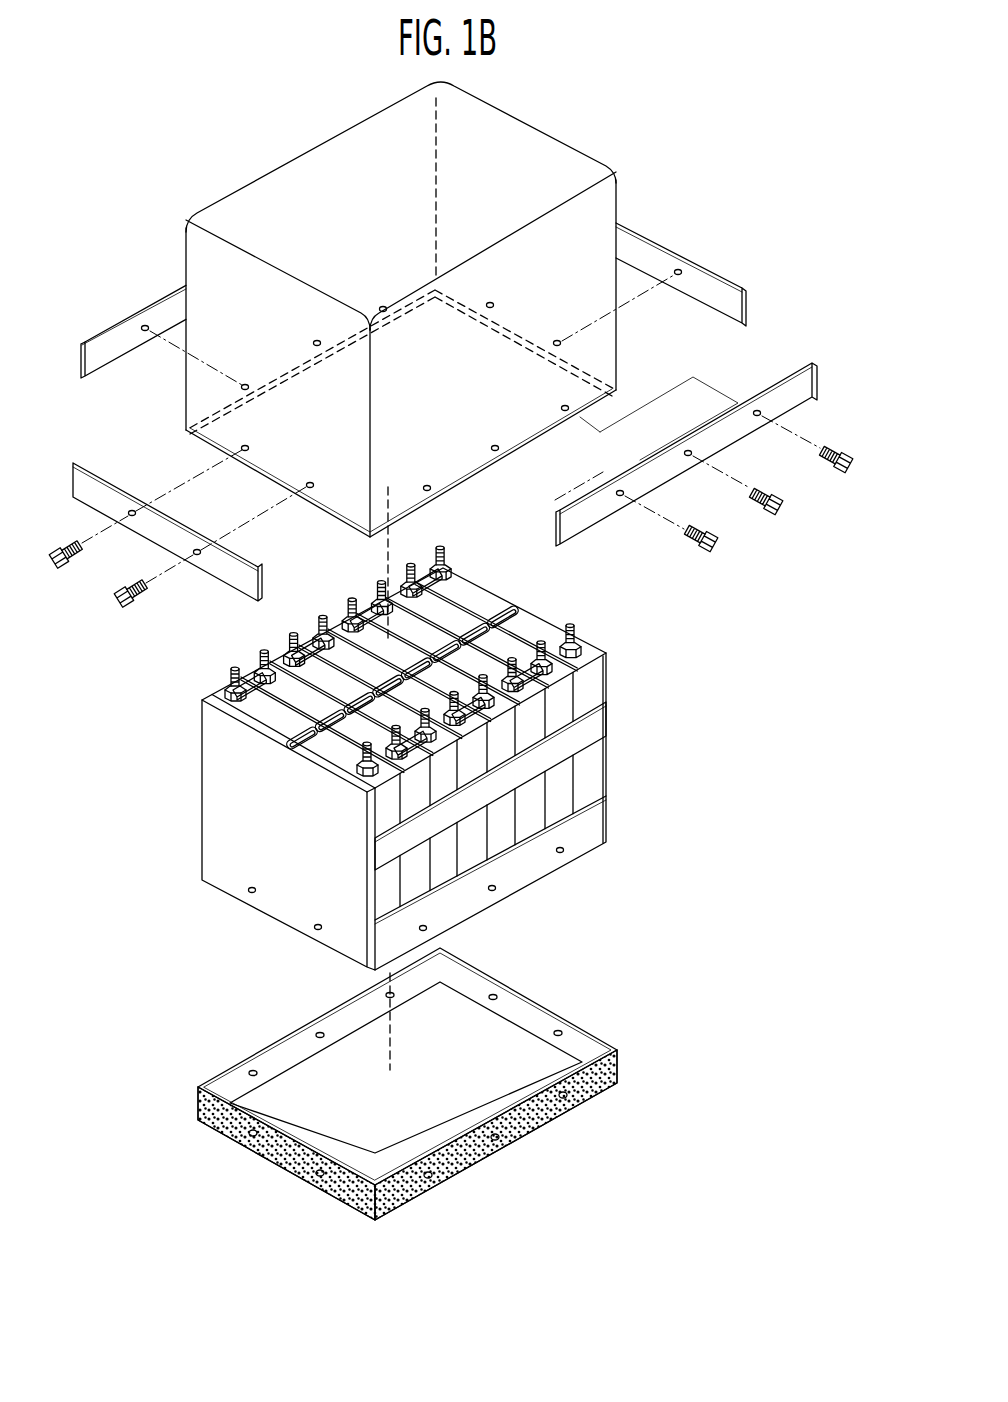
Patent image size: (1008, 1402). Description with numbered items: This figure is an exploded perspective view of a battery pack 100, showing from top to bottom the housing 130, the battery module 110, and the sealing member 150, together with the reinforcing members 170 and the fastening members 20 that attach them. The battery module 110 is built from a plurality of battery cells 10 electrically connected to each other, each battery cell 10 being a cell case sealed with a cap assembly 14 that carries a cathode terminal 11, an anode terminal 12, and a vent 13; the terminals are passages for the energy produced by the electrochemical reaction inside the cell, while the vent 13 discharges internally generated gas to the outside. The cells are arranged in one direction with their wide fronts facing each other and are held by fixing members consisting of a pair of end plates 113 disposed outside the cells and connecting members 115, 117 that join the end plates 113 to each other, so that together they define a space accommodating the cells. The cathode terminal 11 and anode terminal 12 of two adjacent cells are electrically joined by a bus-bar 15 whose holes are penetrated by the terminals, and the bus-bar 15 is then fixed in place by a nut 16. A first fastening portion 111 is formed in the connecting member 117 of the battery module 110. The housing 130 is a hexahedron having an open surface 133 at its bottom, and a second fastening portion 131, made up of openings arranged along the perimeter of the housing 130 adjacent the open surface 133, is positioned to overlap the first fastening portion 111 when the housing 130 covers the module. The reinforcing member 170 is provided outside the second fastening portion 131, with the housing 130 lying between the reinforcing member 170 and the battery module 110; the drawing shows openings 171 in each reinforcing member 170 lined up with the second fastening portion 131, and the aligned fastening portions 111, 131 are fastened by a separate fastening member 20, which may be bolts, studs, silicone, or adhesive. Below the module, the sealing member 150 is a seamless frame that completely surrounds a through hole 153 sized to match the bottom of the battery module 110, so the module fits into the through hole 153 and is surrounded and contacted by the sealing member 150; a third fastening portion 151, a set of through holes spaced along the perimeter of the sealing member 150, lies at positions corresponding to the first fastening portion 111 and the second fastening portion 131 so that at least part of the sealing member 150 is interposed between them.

The battery pack 100 is at (662, 129).
The battery module 110 is at (164, 753).
The battery cell 10 is at (570, 799).
The cathode terminal 11 is at (438, 556).
The anode terminal 12 is at (568, 634).
The vent 13 is at (505, 612).
The cap assembly 14 is at (473, 590).
The bus-bar 15 is at (245, 682).
The nut 16 is at (294, 652).
The first fastening portion 111 is at (426, 928).
The end plate 113 is at (212, 837).
The connecting member 115 is at (612, 736).
The connecting member 117 is at (480, 902).
The housing 130 is at (528, 127).
The second fastening portion 131 is at (310, 485).
The open surface 133 is at (407, 406).
The sealing member 150 is at (176, 1056).
The third fastening portion 151 is at (318, 1174).
The through hole 153 is at (410, 1095).
The reinforcing member 170 is at (113, 306).
The coupling holes of connection member 171 is at (196, 553).
The fastening member 20 is at (120, 588).